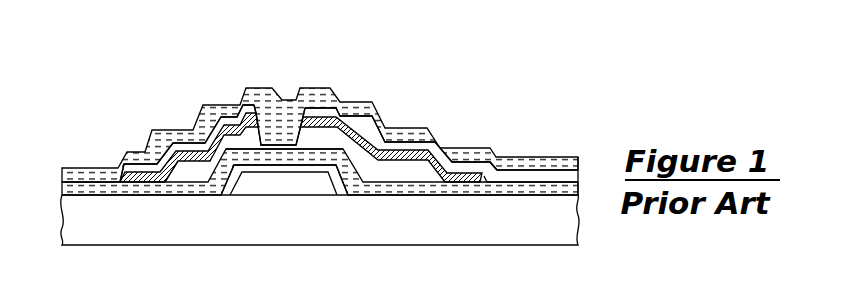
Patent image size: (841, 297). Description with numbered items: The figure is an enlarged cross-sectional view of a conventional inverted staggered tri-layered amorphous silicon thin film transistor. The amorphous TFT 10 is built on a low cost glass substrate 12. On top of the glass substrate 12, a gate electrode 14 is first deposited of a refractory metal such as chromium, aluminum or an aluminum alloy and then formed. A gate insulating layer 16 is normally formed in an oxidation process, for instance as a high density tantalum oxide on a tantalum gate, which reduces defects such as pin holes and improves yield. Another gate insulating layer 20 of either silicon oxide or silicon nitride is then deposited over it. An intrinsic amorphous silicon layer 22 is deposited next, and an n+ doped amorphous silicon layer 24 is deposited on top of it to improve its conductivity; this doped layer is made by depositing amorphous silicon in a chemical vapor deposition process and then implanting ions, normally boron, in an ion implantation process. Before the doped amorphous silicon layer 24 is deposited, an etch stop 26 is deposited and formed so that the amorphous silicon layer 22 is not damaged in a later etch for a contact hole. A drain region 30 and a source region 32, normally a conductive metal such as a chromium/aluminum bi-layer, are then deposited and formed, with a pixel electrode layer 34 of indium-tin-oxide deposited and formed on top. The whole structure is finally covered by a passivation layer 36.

The amorphous TFT 10 is at (320, 148).
The glass substrate 12 is at (440, 229).
The gate electrode 14 is at (247, 192).
The gate insulating layer 16 is at (332, 192).
The gate insulating layer 20 is at (93, 199).
The intrinsic amorphous silicon layer 22 is at (243, 142).
The n+ doped amorphous silicon layer 24 is at (322, 119).
The etch stop 26 is at (280, 129).
The drain region 30 is at (394, 140).
The source region 32 is at (131, 170).
The pixel electrode layer 34 is at (513, 186).
The passivation layer 36 is at (196, 104).